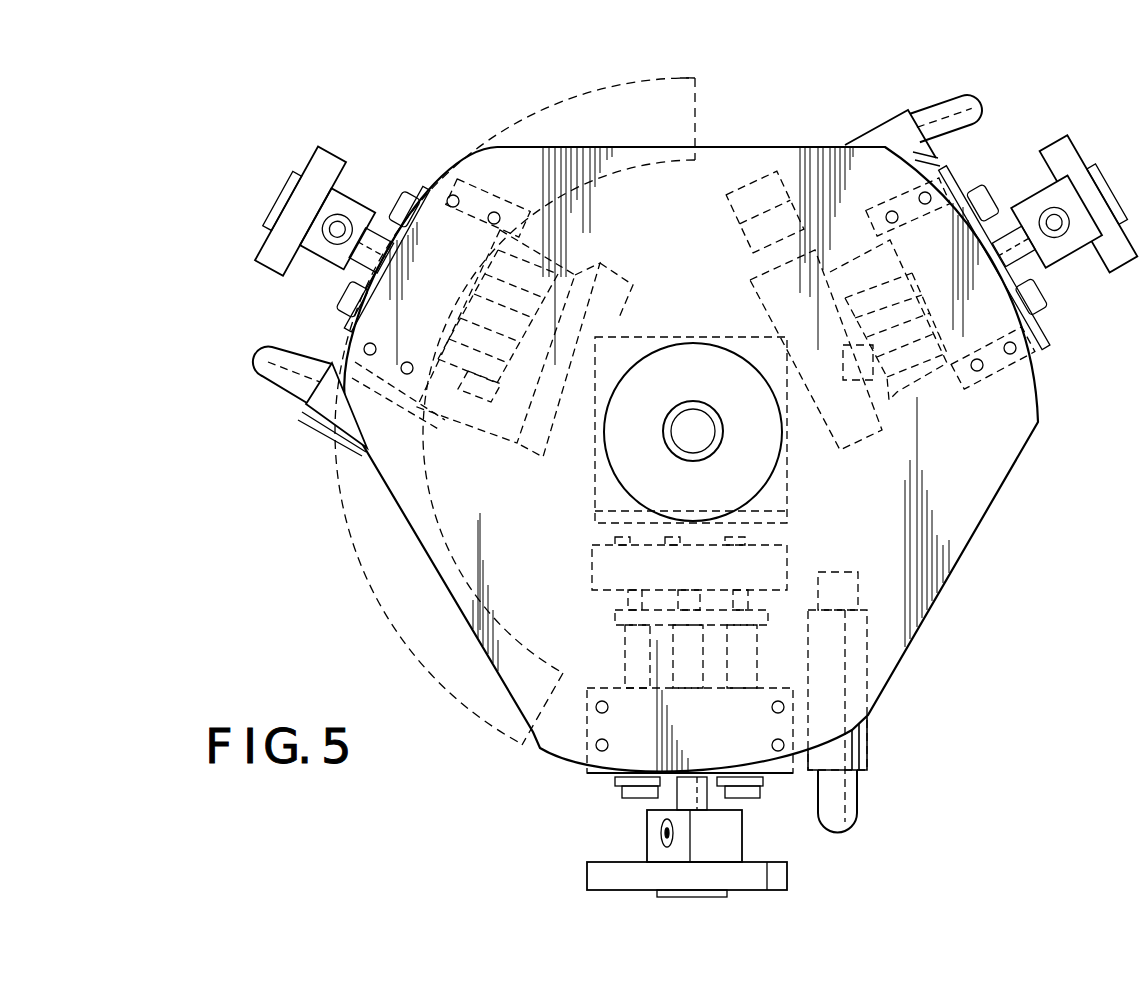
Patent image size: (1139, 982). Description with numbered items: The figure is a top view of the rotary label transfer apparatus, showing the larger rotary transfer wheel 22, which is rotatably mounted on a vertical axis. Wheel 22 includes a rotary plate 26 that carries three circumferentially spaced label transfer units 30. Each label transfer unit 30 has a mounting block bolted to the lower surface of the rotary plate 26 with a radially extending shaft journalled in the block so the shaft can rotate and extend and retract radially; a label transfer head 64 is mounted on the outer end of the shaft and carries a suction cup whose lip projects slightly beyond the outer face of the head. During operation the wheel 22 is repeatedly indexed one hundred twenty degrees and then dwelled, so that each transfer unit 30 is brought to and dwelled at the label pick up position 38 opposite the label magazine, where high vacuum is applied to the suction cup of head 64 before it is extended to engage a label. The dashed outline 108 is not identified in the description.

The rotary transfer wheel 22 is at (1018, 527).
The rotary plate 26 is at (762, 147).
The label transfer unit 30 is at (754, 275).
The label pick up position 38 is at (252, 243).
The label transfer head 64 is at (350, 163).
The cover 108 is at (622, 92).